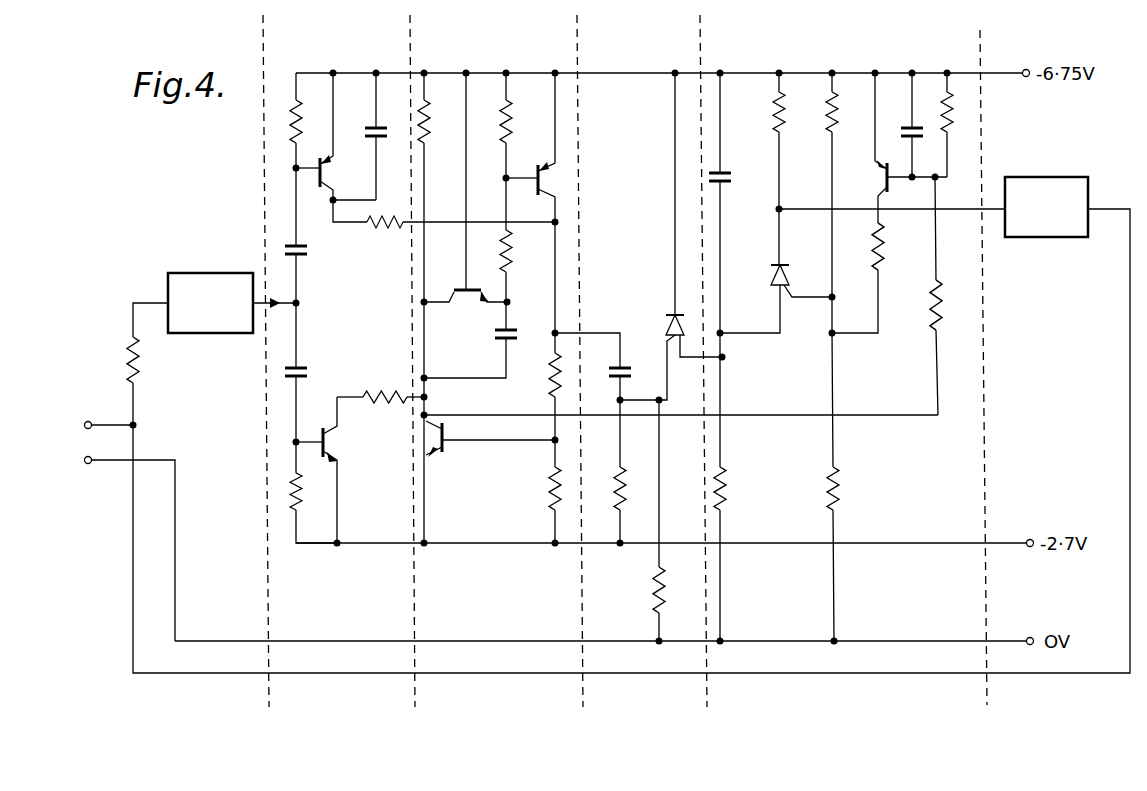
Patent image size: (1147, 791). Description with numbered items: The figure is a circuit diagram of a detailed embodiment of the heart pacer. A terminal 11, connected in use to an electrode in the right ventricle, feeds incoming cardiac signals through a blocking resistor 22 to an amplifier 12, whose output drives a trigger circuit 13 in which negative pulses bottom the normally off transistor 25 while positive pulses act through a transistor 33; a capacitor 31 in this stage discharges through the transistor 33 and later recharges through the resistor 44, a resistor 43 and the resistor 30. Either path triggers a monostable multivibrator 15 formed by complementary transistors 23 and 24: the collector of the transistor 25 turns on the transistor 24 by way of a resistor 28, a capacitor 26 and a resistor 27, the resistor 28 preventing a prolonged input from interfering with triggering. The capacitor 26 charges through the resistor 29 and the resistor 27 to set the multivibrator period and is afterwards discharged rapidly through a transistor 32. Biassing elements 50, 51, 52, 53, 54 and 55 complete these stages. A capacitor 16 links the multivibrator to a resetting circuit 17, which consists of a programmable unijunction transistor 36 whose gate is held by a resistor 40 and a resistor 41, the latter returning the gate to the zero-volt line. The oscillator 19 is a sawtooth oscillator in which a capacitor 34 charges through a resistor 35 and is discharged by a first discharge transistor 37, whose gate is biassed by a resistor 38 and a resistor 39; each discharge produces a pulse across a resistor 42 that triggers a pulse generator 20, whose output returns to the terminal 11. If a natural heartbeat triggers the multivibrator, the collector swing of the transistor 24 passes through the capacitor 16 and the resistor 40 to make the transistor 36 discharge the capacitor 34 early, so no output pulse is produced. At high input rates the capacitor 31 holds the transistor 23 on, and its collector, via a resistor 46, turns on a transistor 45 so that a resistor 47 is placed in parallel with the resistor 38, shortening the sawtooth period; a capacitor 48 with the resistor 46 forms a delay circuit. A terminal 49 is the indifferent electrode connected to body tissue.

The terminal 11 is at (108, 410).
The terminal 49 is at (123, 549).
The blocking resistor 22 is at (151, 364).
The amplifier 12 is at (234, 288).
The trigger circuit 13 is at (411, 361).
The biassing element 50 is at (310, 120).
The capacitor 31 is at (360, 135).
The transistor 33 is at (326, 137).
The resistor 44 is at (446, 228).
The biassing element 51 is at (314, 235).
The biassing element 52 is at (312, 372).
The transistor 25 is at (331, 472).
The resistor 28 is at (382, 385).
The biassing element 53 is at (313, 492).
The monostable multivibrator 15 is at (500, 361).
The biassing element 54 is at (438, 188).
The transistor 32 is at (467, 188).
The resistor 29 is at (521, 126).
The transistor 24 is at (542, 146).
The resistor 27 is at (522, 240).
The capacitor 26 is at (481, 342).
The resistor 43 is at (542, 344).
The transistor 23 is at (490, 424).
The resistor 30 is at (542, 507).
The resetting circuit 17 is at (640, 361).
The capacitor 16 is at (593, 368).
The second discharge device 36 is at (668, 326).
The resistor 40 is at (607, 473).
The resistor 41 is at (647, 522).
The sawtooth oscillator 19 is at (848, 367).
The capacitor 34 is at (732, 203).
The resistor 35 is at (737, 489).
The resistor 42 is at (762, 168).
The first discharge device 37 is at (778, 293).
The resistor 38 is at (816, 203).
The resistor 39 is at (850, 489).
The resistor 47 is at (858, 264).
The transistor 45 is at (895, 133).
The capacitor 48 is at (901, 124).
The biassing element 55 is at (936, 124).
The resistor 46 is at (920, 296).
The pulse generator 20 is at (631, 410).